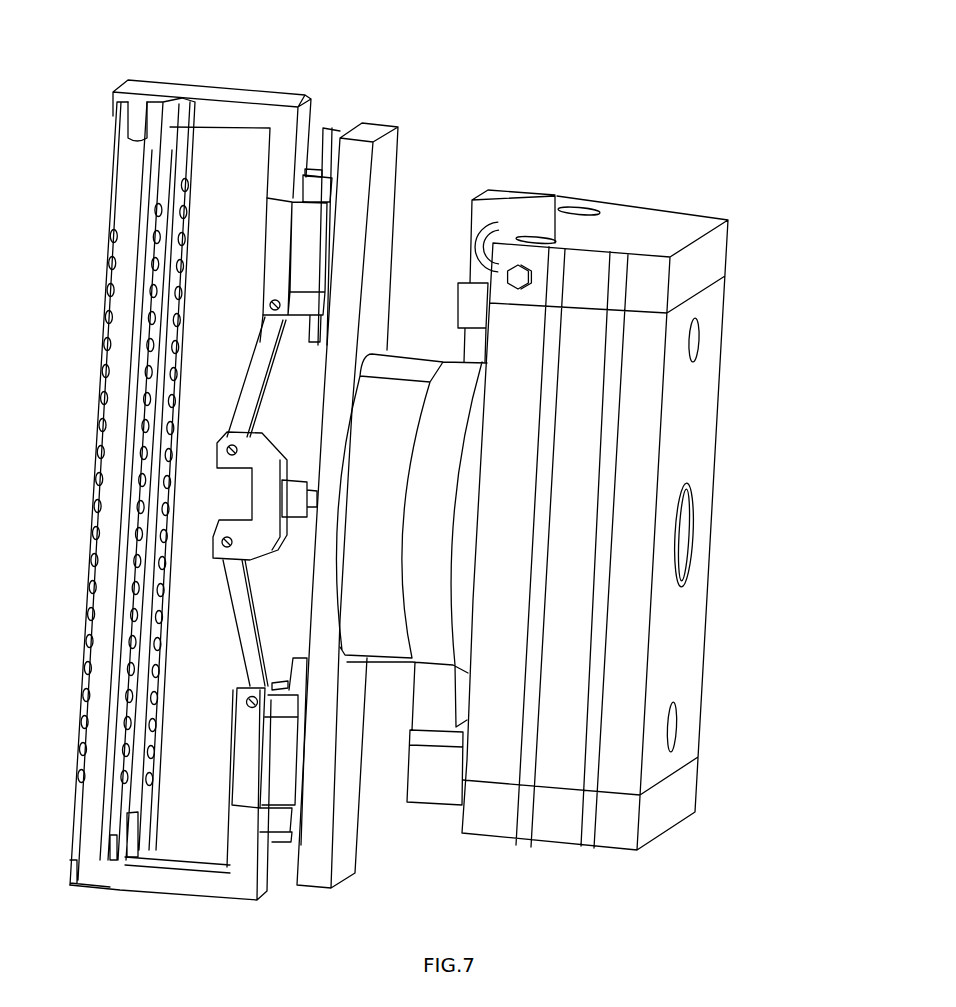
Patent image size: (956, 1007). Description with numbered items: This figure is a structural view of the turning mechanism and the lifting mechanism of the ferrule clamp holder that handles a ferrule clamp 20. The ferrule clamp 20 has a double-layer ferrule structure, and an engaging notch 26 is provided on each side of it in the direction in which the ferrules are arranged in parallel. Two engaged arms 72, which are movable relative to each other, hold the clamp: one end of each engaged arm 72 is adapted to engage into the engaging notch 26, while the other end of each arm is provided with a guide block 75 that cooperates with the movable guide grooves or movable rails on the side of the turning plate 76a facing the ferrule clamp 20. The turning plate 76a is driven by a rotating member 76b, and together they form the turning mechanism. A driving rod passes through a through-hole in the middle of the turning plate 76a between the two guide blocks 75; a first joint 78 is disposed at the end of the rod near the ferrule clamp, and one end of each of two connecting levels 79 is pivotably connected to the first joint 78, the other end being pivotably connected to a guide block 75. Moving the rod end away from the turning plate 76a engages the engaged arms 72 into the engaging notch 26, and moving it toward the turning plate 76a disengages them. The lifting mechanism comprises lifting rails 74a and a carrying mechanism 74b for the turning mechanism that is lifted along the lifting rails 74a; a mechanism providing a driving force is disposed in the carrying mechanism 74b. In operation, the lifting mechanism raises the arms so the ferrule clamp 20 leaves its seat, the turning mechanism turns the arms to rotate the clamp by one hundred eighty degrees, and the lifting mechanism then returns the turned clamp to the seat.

The ferrule clamp 20 is at (123, 187).
The engaging notch 26 is at (175, 137).
The engaged arm 72 is at (242, 107).
The lifting rail 74a is at (500, 238).
The carrying mechanism 74b is at (650, 400).
The guide block 75 is at (280, 763).
The turning plate 76a is at (380, 158).
The rotating member 76b is at (383, 490).
The first joint 78 is at (266, 505).
The connecting level 79 is at (250, 632).